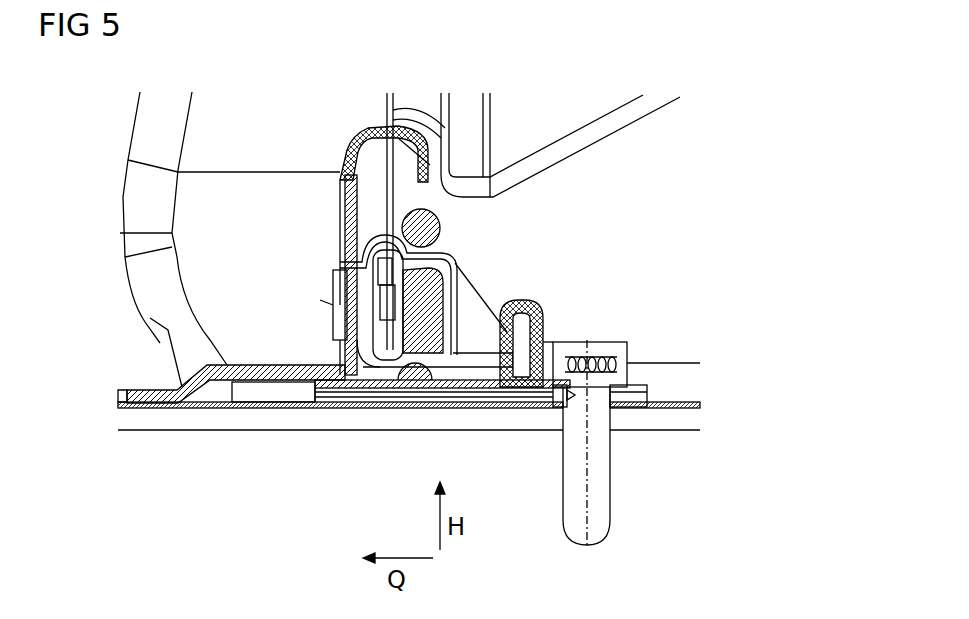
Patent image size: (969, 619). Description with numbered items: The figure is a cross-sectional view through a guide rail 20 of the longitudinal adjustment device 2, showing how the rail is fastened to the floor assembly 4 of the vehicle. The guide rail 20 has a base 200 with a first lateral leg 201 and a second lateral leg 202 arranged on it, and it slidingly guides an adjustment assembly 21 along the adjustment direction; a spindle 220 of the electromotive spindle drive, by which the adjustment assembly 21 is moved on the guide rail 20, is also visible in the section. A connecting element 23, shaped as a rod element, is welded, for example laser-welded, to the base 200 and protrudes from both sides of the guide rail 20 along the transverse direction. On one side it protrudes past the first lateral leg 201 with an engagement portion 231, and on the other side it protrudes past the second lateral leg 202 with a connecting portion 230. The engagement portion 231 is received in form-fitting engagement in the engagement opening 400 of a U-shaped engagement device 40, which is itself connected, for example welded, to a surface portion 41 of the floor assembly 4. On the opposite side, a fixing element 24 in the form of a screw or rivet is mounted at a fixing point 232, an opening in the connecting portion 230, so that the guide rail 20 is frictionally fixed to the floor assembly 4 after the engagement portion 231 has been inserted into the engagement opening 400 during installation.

The longitudinal adjustment device 2 is at (532, 248).
The floor assembly 4 is at (132, 415).
The guide rail 20 is at (533, 320).
The adjustment assembly 21 is at (458, 264).
The connecting element 23 is at (487, 395).
The fixing element 24 is at (618, 363).
The engagement device 40 is at (223, 383).
The surface portion 41 is at (118, 392).
The base 200 is at (383, 398).
The first lateral leg 201 is at (343, 240).
The second lateral leg 202 is at (543, 335).
The spindle 220 is at (373, 127).
The connecting portion 230 is at (635, 412).
The engagement portion 231 is at (318, 400).
The fixing point 232 is at (565, 412).
The engagement opening 400 is at (203, 393).